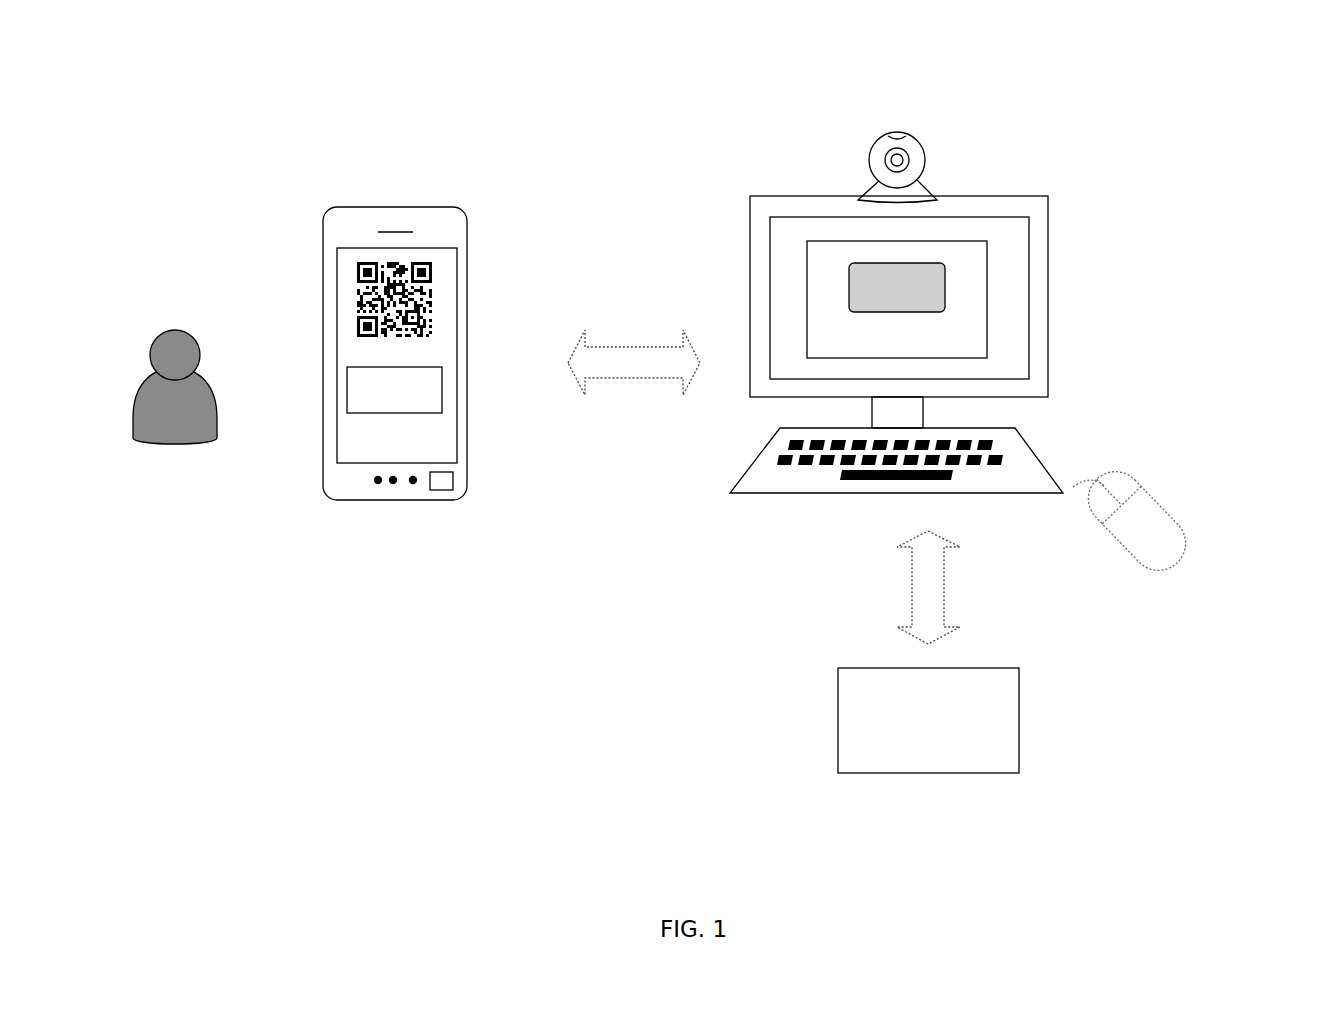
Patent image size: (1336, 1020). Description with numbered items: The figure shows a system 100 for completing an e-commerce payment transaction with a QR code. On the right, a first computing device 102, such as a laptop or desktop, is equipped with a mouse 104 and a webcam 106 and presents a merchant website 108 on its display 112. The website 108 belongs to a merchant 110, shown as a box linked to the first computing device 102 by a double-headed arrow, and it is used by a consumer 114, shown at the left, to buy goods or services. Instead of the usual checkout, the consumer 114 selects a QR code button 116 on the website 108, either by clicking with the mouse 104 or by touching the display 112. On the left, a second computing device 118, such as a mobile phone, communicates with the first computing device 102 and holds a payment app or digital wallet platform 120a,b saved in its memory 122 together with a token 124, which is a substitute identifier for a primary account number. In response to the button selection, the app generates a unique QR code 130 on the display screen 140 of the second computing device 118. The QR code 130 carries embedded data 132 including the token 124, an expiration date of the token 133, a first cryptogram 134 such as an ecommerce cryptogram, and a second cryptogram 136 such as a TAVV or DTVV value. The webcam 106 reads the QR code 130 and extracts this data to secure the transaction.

The system 100 is at (1212, 60).
The first computing device 102 is at (1087, 195).
The mouse 104 is at (1172, 513).
The webcam 106 is at (920, 177).
The website 108 is at (990, 302).
The merchant 110 is at (928, 720).
The display 112 is at (1015, 337).
The consumer 114 is at (175, 328).
The QR code button 116 is at (850, 285).
The second computing device 118 is at (465, 203).
The payment app or digital wallet platform 120a,b is at (455, 210).
The memory 122 is at (450, 475).
The token 124 is at (435, 390).
The QR code 130 is at (357, 282).
The embedded data 132 is at (476, 210).
The expiration date of the token 133 is at (476, 210).
The first cryptogram 134 is at (476, 210).
The second cryptogram 136 is at (415, 262).
The display screen 140 is at (365, 437).